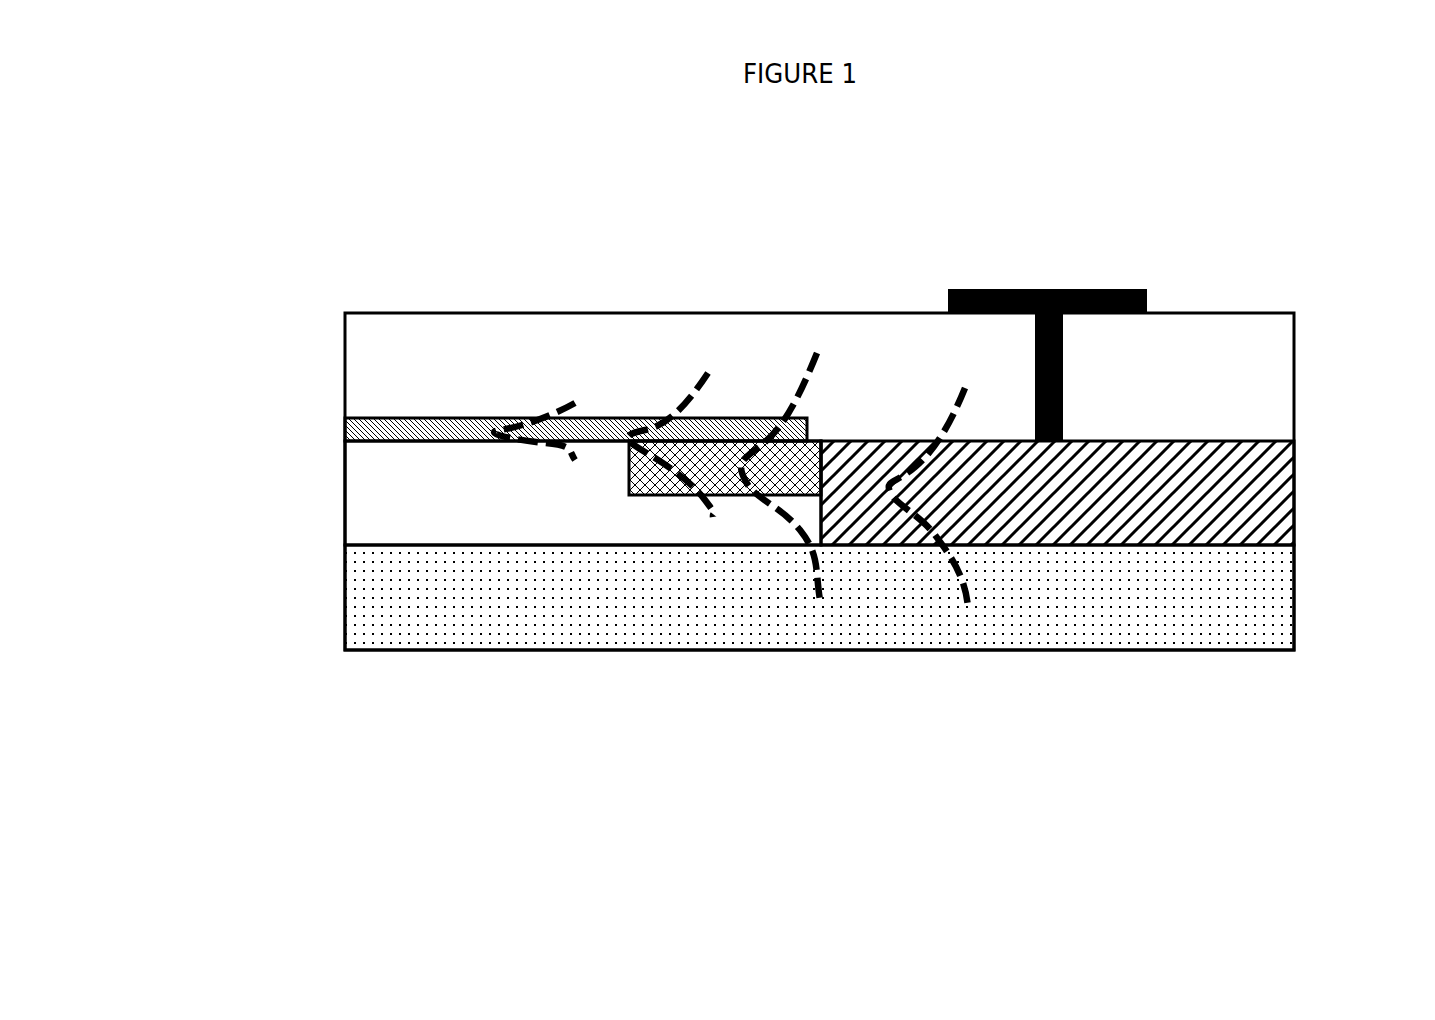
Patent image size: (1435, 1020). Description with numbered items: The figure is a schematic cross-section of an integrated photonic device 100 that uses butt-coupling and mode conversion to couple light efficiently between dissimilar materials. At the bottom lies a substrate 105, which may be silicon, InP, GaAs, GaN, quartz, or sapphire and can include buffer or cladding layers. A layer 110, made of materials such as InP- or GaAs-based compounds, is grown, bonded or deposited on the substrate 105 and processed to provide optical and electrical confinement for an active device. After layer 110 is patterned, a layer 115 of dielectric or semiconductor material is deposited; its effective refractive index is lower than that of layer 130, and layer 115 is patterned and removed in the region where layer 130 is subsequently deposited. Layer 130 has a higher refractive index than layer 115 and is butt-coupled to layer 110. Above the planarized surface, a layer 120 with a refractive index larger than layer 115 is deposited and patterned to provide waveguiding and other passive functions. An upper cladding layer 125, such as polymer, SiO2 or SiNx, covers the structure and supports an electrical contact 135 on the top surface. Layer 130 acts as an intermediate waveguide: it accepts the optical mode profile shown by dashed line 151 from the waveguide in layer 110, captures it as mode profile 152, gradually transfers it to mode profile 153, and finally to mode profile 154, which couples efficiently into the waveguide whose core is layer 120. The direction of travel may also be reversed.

The integrated photonic device 100 is at (292, 214).
The substrate 105 is at (800, 608).
The layer 110 is at (1295, 495).
The layer 115 is at (345, 495).
The layer 120 is at (345, 435).
The upper cladding layer 125 is at (1295, 362).
The layer 130 is at (640, 498).
The electrical contacts 135 is at (1092, 289).
The dashed line 151 is at (947, 430).
The mode profile 152 is at (800, 400).
The mode profiles 153 is at (675, 417).
The mode profile 154 is at (541, 418).